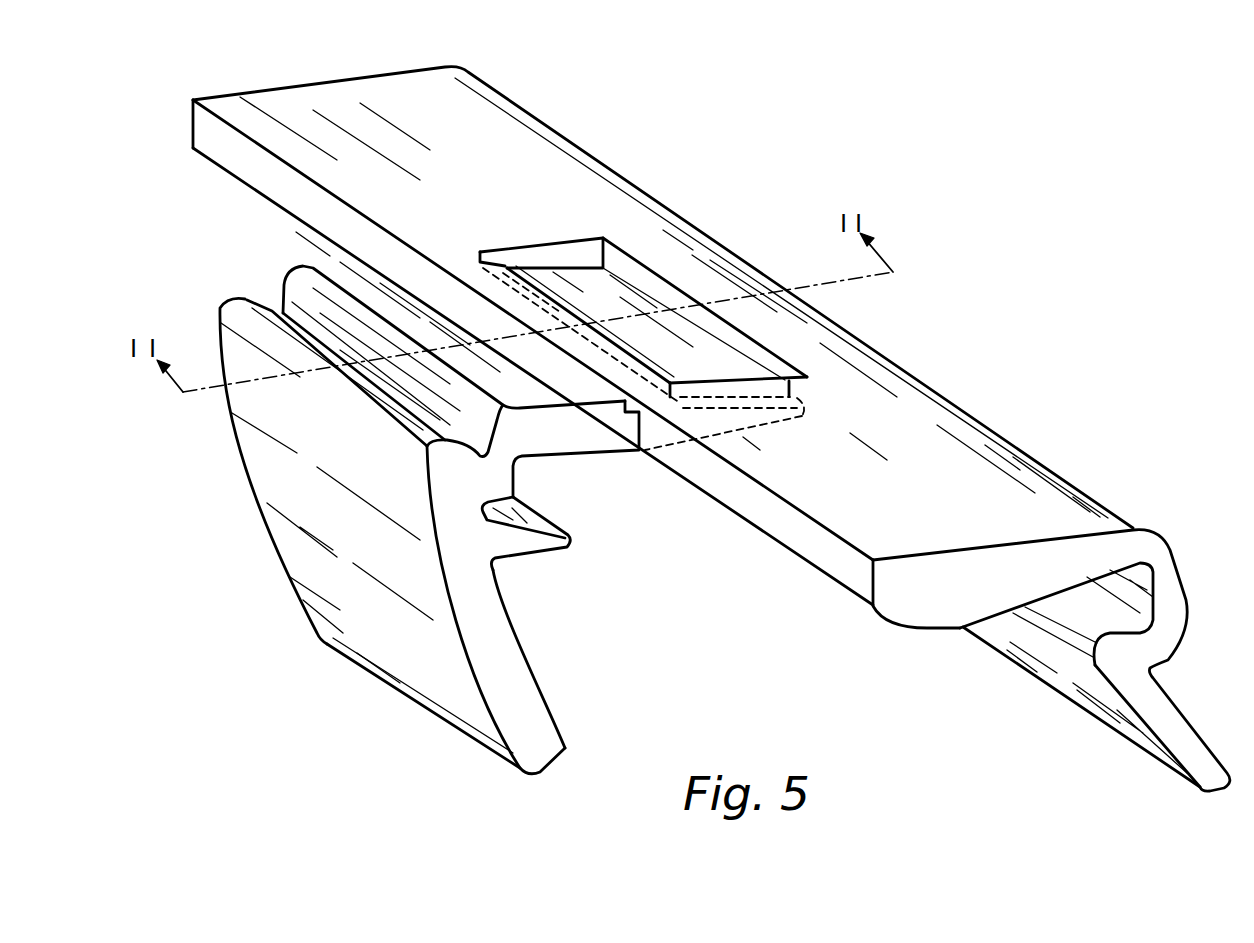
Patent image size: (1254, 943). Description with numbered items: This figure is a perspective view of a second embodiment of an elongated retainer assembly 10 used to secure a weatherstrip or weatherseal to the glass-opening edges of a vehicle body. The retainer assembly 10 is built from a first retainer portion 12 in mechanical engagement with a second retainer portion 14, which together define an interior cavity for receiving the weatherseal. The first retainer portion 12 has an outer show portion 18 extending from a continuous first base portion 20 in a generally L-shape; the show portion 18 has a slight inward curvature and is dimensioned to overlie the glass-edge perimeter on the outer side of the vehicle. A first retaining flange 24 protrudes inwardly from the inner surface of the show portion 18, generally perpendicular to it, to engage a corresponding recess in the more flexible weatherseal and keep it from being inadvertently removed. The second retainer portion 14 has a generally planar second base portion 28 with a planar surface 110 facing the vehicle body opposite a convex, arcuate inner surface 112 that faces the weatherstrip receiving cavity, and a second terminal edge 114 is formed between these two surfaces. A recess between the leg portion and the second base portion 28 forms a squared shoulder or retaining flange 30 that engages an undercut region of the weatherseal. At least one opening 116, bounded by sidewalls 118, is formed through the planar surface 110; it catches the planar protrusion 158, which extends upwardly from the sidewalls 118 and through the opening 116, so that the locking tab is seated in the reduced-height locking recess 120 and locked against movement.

The retainer assembly 10 is at (1118, 154).
The first retainer portion 12 is at (375, 502).
The second retainer portion 14 is at (663, 338).
The outer show portion 18 is at (390, 620).
The first base portion 20 is at (337, 262).
The first retaining flange 24 is at (530, 555).
The second base portion 28 is at (985, 475).
The retaining flange 30 is at (1092, 635).
The planar surface 110 is at (1051, 623).
The arcuate inner surface 112 is at (932, 628).
The second terminal edge 114 is at (840, 568).
The opening 116 is at (755, 347).
The sidewalls 118 is at (556, 249).
The locking recess 120 is at (639, 433).
The planar protrusion 158 is at (550, 280).